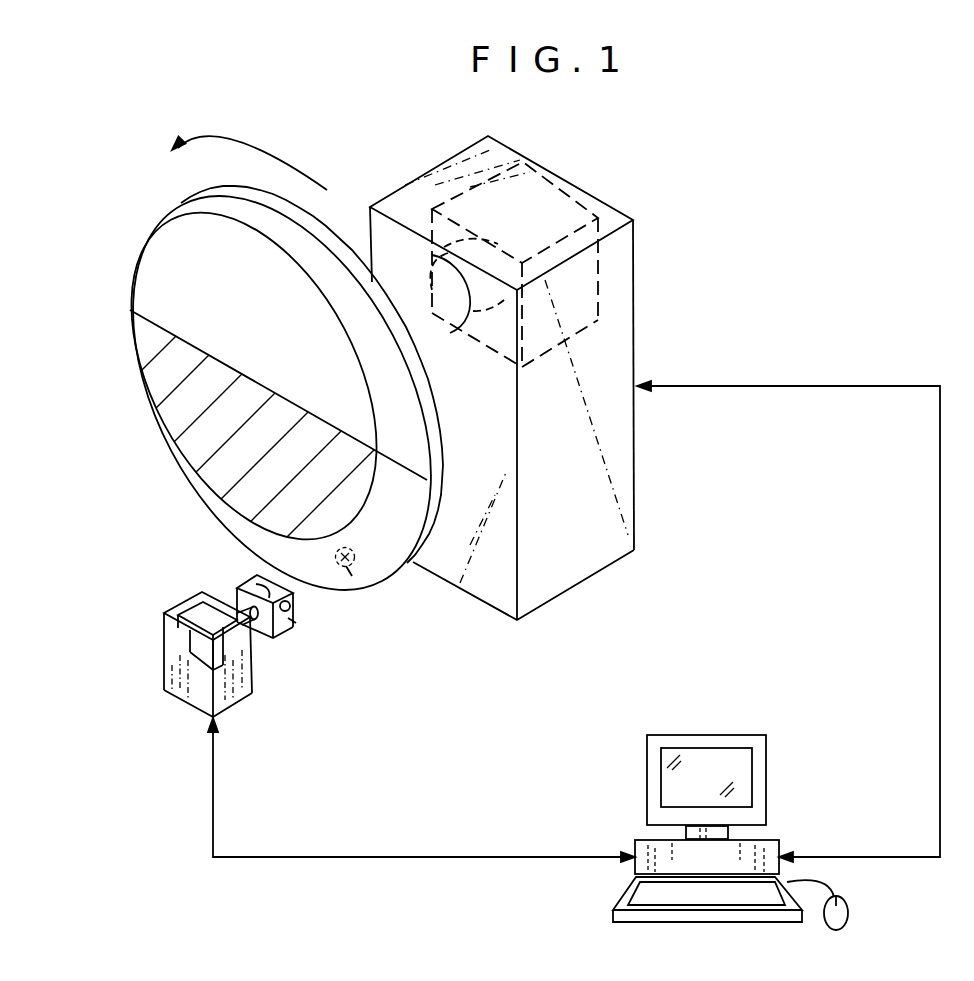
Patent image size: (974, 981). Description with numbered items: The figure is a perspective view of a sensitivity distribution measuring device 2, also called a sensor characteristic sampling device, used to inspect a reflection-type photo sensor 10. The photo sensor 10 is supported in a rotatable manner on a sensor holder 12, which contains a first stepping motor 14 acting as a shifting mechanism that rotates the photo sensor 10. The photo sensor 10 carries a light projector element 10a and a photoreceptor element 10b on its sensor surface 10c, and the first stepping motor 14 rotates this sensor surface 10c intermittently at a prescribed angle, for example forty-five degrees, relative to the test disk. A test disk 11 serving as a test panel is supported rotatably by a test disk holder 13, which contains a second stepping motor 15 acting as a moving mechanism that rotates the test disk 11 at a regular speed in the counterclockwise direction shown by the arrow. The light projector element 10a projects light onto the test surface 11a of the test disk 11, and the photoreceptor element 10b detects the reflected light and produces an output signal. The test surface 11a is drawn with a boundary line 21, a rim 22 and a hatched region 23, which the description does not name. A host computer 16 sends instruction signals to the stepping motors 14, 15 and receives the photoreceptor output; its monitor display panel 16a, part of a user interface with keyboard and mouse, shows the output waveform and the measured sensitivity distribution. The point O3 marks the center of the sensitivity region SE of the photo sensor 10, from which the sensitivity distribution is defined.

The sensitivity distribution measuring device 2 is at (778, 220).
The photo sensor 10 is at (258, 672).
The light projector element 10a is at (237, 582).
The photoreceptor element 10b is at (298, 606).
The sensor surface 10c is at (298, 622).
The test disk 11 is at (252, 381).
The test surface 11a is at (157, 292).
The sensor holder 12 is at (180, 688).
The test disk holder 13 is at (620, 282).
The first stepping motor 14 is at (168, 636).
The second stepping motor 15 is at (529, 245).
The host computer 16 is at (730, 796).
The monitor display panel 16a is at (743, 778).
The boundary line 21 is at (407, 470).
The disc rim 22 is at (292, 268).
The hatched region 23 is at (183, 412).
The center of sensitivity region O3 is at (355, 545).
The sensitivity region SE is at (353, 569).